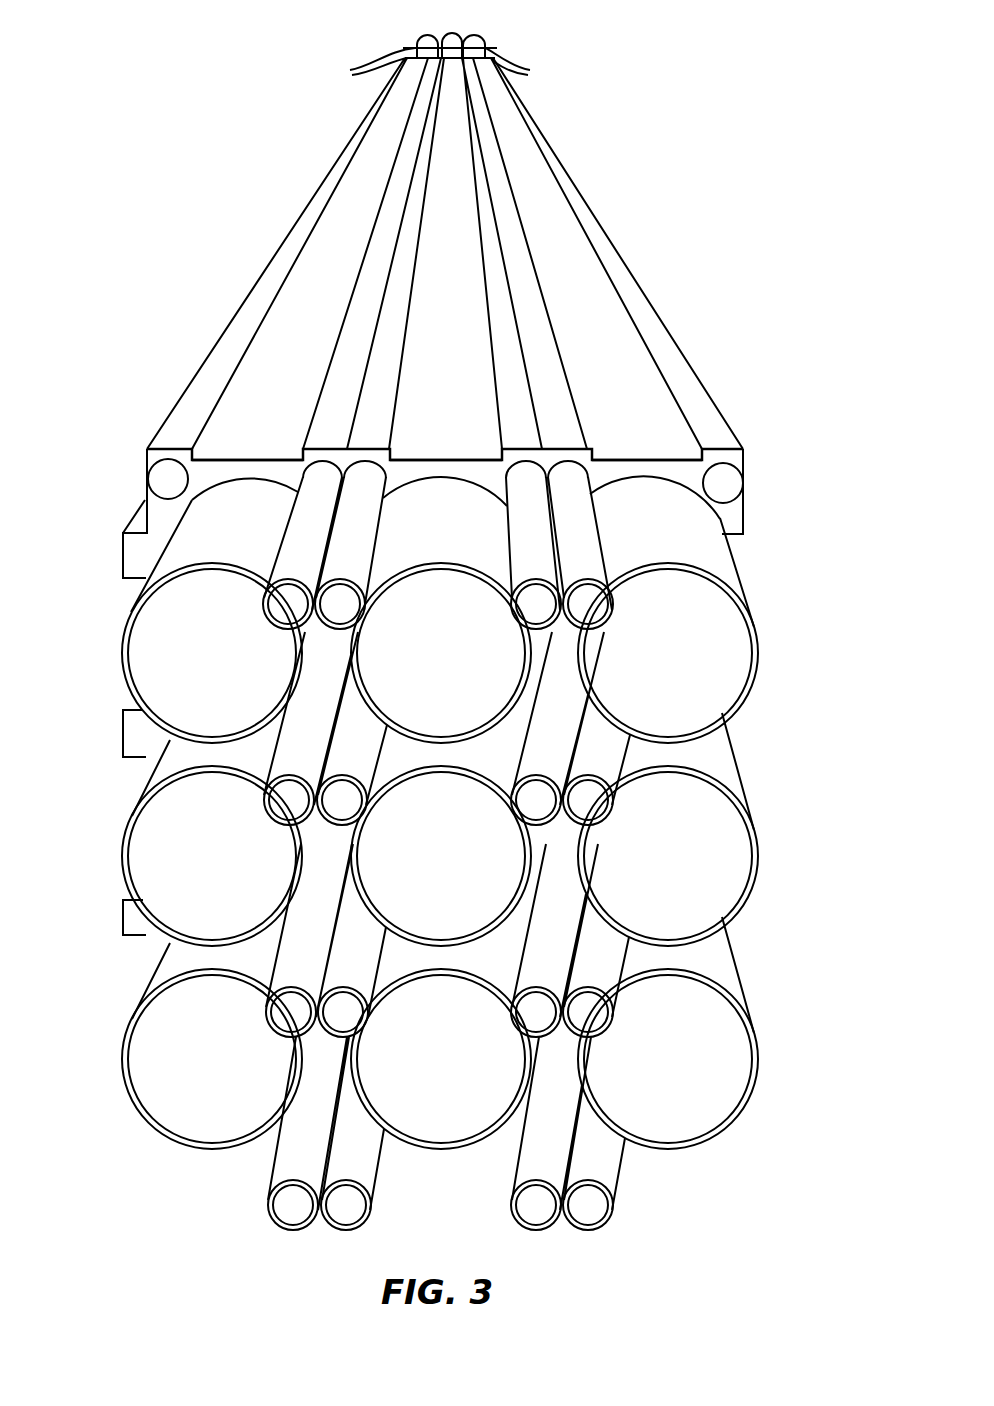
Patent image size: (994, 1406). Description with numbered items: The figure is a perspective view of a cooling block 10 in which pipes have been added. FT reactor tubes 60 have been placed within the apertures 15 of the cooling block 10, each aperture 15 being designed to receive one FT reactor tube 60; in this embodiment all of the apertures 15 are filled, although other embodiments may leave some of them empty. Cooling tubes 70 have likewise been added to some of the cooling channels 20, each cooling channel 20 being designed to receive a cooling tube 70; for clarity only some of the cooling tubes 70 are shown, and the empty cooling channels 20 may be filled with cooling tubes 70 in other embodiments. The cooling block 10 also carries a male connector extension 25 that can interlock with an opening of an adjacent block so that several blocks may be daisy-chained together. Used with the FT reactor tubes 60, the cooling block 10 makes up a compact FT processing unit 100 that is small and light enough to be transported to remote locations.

The FT processing unit 100 is at (769, 426).
The cooling block 10 is at (250, 468).
The aperture 15 is at (250, 468).
The cooling channel 20 is at (349, 449).
The male connector extension 25 is at (125, 740).
The FT reactor tube 60 is at (440, 602).
The cooling tube 70 is at (425, 37).